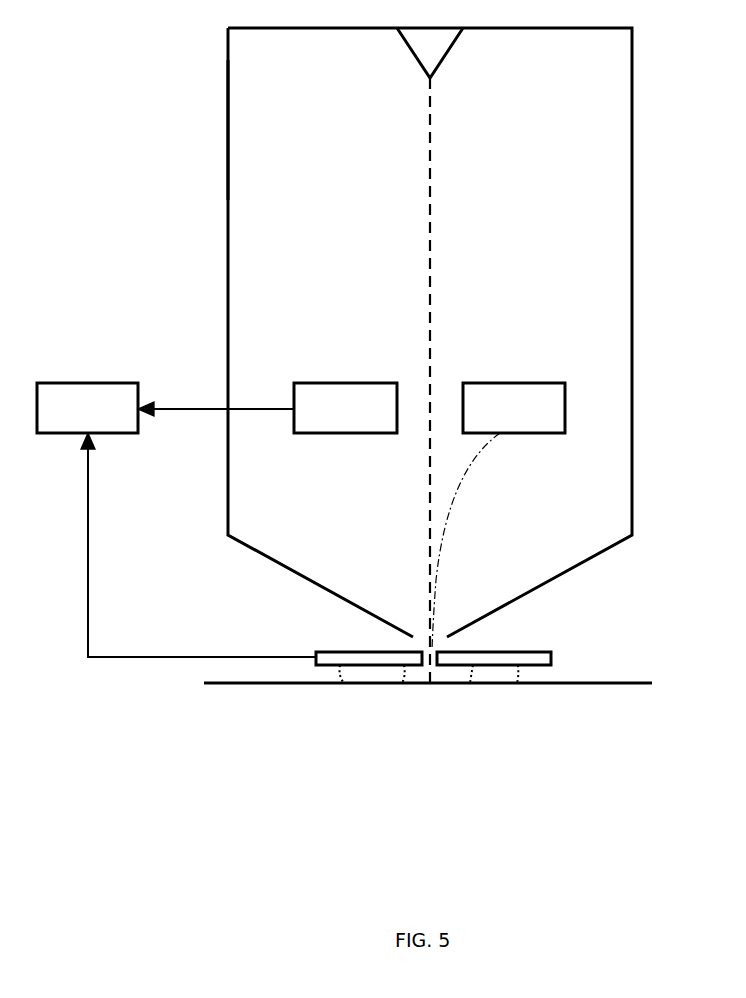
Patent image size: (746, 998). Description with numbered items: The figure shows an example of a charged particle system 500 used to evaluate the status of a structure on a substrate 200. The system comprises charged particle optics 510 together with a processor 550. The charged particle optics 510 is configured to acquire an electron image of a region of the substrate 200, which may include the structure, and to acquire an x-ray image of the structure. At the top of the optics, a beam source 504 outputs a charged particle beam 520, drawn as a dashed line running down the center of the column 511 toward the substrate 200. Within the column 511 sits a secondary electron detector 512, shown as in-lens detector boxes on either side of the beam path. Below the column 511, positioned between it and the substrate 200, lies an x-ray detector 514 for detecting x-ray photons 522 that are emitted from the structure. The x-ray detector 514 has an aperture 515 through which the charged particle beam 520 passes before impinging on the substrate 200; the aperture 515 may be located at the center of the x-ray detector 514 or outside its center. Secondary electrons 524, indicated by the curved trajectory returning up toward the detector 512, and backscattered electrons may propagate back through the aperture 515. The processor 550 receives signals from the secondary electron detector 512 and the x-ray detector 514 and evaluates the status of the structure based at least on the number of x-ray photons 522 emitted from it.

The substrate 200 is at (634, 683).
The charged particle system 500 is at (592, 804).
The beam source 504 is at (447, 51).
The charged particle optics 510 is at (286, 76).
The column 511 is at (227, 122).
The secondary electron detector 512 is at (363, 418).
The x-ray detector 514 is at (375, 652).
The aperture 515 is at (440, 650).
The charged particle beam 520 is at (430, 210).
The x-ray photons 522 is at (404, 686).
The secondary electrons 524 is at (466, 484).
The processor 550 is at (105, 418).